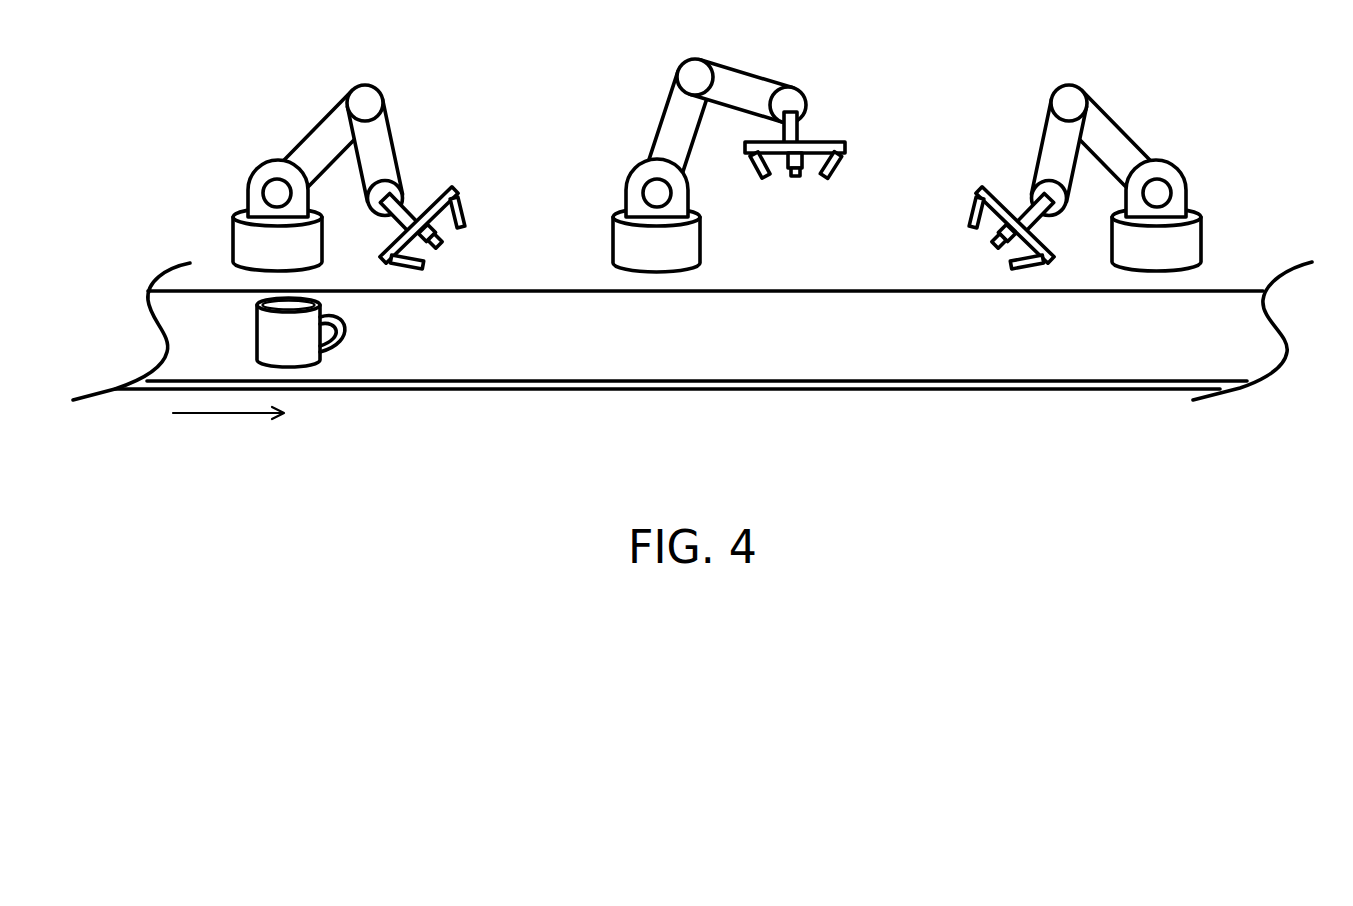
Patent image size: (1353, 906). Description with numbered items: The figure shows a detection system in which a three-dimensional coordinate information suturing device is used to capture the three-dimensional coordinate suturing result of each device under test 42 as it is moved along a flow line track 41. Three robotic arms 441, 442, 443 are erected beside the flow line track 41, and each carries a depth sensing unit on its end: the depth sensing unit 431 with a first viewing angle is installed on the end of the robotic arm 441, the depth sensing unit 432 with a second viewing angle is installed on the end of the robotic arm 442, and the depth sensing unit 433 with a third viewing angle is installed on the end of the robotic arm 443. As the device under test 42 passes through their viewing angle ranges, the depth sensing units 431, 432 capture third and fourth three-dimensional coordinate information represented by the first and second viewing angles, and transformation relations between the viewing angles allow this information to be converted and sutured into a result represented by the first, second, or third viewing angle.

The flow line track 41 is at (1217, 307).
The device under test 42 is at (349, 322).
The depth sensing unit 431 is at (453, 188).
The depth sensing unit 432 is at (825, 140).
The depth sensing unit 433 is at (975, 188).
The robotic arm 441 is at (312, 127).
The robotic arm 442 is at (658, 118).
The robotic arm 443 is at (1122, 127).